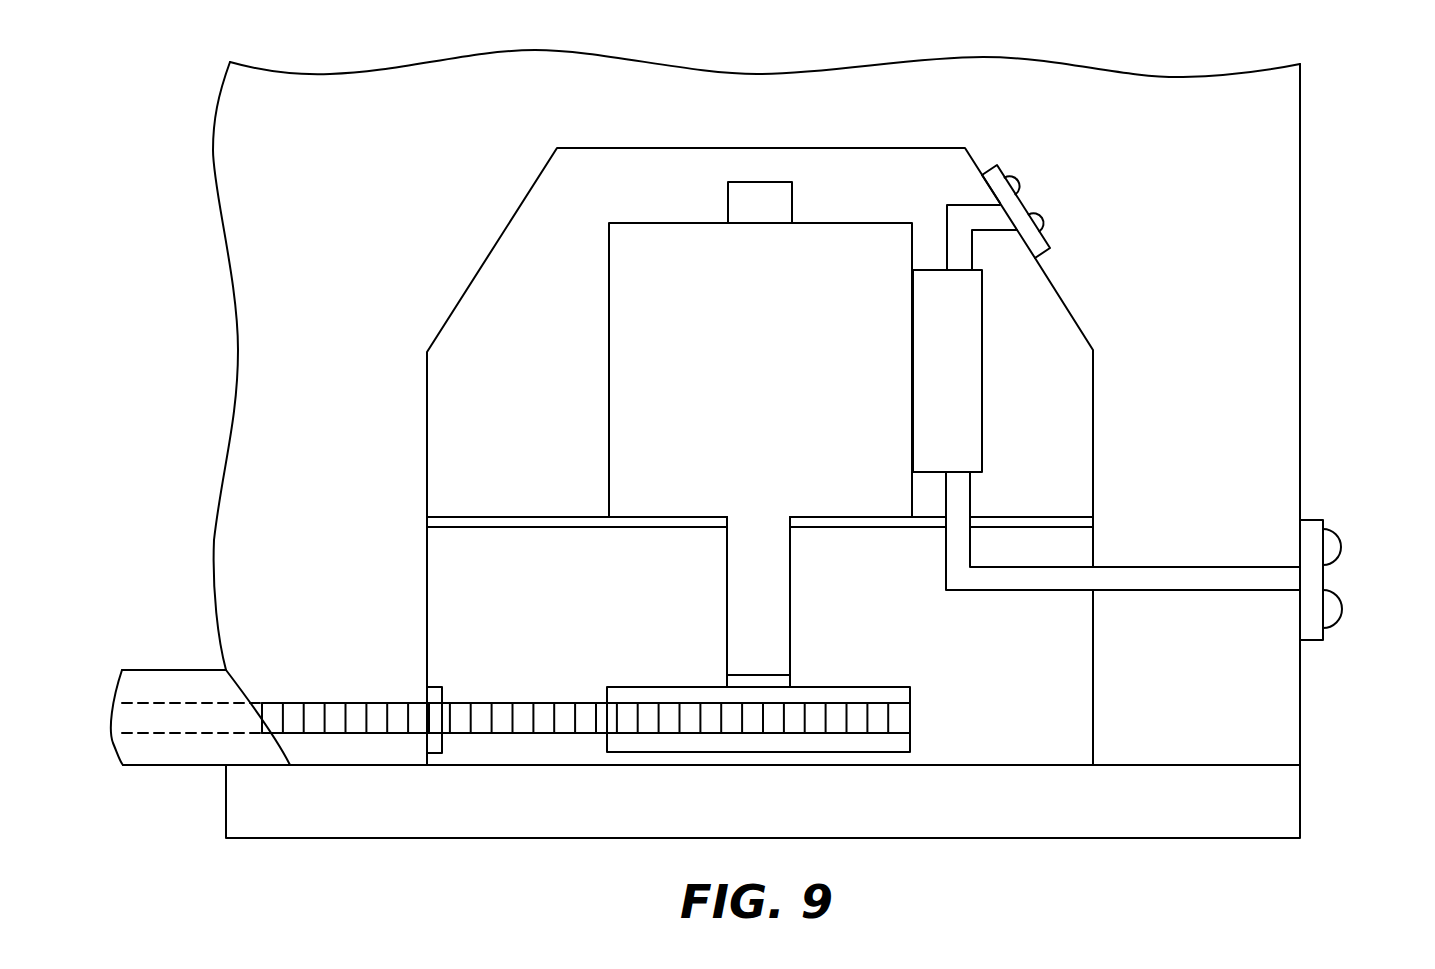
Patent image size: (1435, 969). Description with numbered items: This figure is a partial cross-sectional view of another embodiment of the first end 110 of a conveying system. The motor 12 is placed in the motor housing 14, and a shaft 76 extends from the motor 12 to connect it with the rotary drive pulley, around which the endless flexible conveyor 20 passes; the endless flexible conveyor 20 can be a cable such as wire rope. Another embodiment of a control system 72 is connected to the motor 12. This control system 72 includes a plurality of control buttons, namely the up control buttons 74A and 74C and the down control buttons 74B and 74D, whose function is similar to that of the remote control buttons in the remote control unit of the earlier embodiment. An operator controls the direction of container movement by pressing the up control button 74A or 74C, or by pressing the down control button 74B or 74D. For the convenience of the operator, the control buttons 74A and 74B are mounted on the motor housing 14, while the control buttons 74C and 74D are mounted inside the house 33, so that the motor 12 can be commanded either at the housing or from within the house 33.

The first end 110 is at (794, 435).
The up control button 74A is at (1013, 180).
The down control button 74B is at (1047, 227).
The house 33 is at (1333, 143).
The motor 12 is at (622, 400).
The control system 72 is at (948, 412).
The motor housing 14 is at (1083, 402).
The shaft 76 is at (782, 616).
The endless flexible conveyor 20 is at (902, 718).
The up control button 74C is at (1330, 549).
The down control button 74D is at (1330, 608).